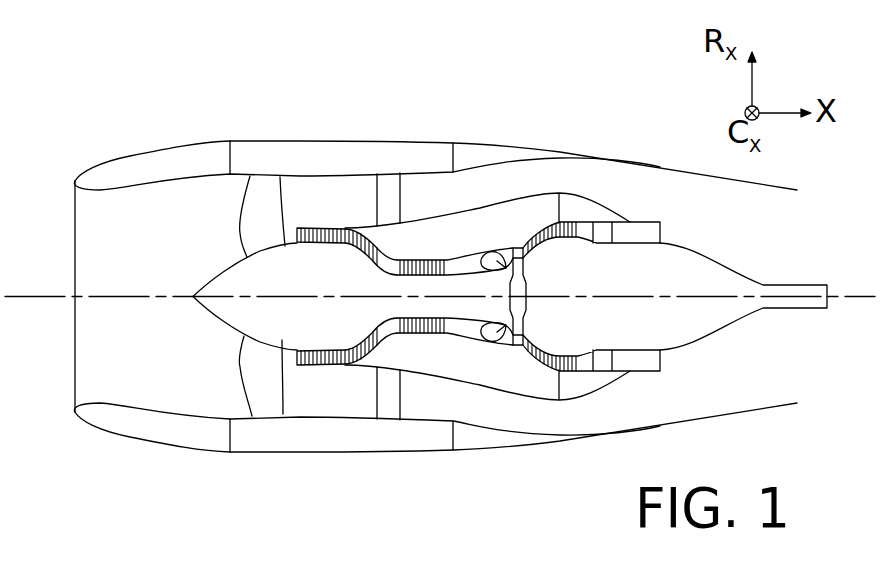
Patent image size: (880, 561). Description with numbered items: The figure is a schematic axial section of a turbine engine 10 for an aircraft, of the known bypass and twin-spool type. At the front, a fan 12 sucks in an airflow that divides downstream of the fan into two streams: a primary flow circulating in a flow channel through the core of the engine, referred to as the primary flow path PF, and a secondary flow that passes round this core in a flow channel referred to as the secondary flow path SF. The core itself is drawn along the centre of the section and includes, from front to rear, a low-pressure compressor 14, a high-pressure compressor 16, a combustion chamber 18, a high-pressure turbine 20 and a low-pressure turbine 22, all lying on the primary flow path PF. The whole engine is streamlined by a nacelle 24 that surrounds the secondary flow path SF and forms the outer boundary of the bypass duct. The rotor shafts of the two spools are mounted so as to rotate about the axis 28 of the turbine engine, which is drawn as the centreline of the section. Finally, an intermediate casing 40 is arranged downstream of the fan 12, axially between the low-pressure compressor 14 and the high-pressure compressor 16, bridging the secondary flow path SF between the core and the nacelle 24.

The turbine engine 10 is at (233, 99).
The fan 12 is at (253, 368).
The low-pressure compressor 14 is at (318, 225).
The high-pressure compressor 16 is at (433, 257).
The combustion chamber 18 is at (493, 247).
The high-pressure turbine 20 is at (518, 245).
The low-pressure turbine 22 is at (585, 219).
The nacelle 24 is at (352, 140).
The axis 28 is at (20, 295).
The intermediate casing 40 is at (407, 391).
The secondary flow path SF is at (313, 398).
The primary flow path PF is at (388, 333).